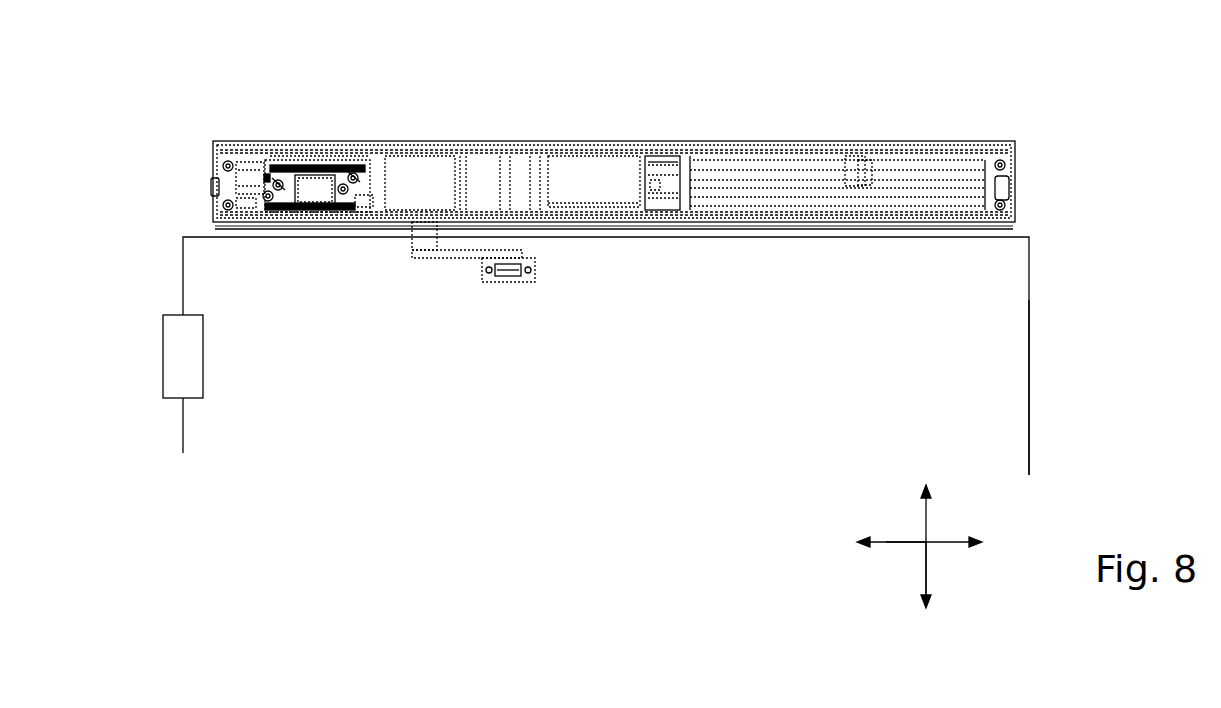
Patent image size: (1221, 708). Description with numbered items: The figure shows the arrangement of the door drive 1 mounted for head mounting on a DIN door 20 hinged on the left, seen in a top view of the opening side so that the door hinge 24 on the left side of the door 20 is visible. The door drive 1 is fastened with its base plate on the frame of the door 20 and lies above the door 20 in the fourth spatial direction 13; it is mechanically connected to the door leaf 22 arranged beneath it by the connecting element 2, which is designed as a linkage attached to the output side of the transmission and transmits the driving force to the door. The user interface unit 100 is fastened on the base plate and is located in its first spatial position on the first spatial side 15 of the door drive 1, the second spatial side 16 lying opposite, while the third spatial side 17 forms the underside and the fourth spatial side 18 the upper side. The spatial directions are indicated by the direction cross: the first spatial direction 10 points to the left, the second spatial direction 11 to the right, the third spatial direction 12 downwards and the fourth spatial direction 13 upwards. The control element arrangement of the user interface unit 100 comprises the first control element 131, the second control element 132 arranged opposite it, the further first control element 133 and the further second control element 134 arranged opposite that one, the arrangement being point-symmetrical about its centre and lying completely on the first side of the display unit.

The door drive 1 is at (822, 120).
The connecting element 2 is at (452, 260).
The first spatial direction 10 is at (893, 545).
The second spatial direction 11 is at (948, 540).
The third spatial direction 12 is at (927, 570).
The fourth spatial direction 13 is at (925, 522).
The first spatial side 15 is at (196, 170).
The second spatial side 16 is at (380, 182).
The third spatial side 17 is at (300, 255).
The fourth spatial side 18 is at (301, 98).
The door 20 is at (160, 233).
The door leaf 22 is at (983, 325).
The door hinge 24 is at (200, 365).
The user interface unit 100 is at (312, 170).
The first control element 131 is at (273, 170).
The second control element 132 is at (340, 185).
The further first control element 133 is at (358, 172).
The further second control element 134 is at (265, 192).